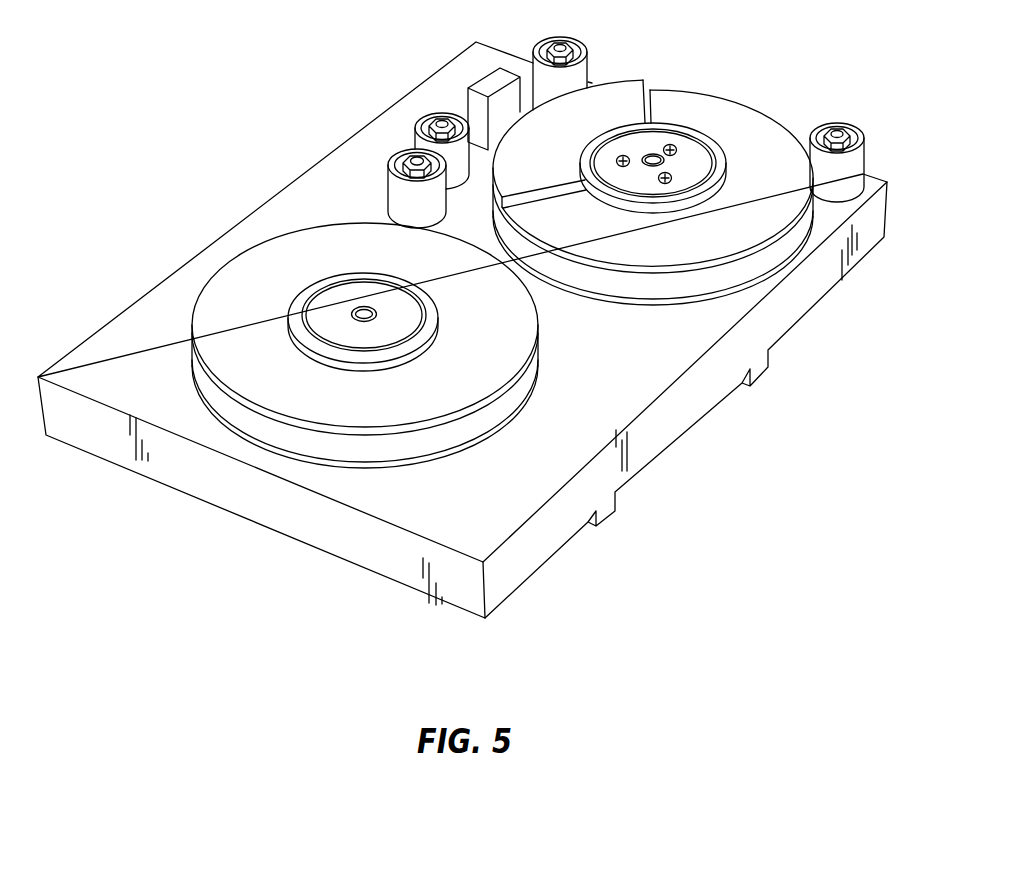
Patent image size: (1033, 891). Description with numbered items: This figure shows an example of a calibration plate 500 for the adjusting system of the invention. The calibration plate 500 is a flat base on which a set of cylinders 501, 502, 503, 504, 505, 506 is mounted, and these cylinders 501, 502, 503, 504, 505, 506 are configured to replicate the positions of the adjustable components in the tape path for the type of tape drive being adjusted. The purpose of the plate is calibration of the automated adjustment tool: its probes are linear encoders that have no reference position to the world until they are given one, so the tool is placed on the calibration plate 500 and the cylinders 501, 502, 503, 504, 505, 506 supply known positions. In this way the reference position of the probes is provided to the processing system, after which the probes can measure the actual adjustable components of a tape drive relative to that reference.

The calibration plate 500 is at (683, 410).
The cylinder 501 is at (860, 160).
The cylinder 502 is at (717, 107).
The cylinder 503 is at (583, 70).
The cylinder 504 is at (417, 147).
The cylinder 505 is at (398, 203).
The cylinder 506 is at (233, 278).